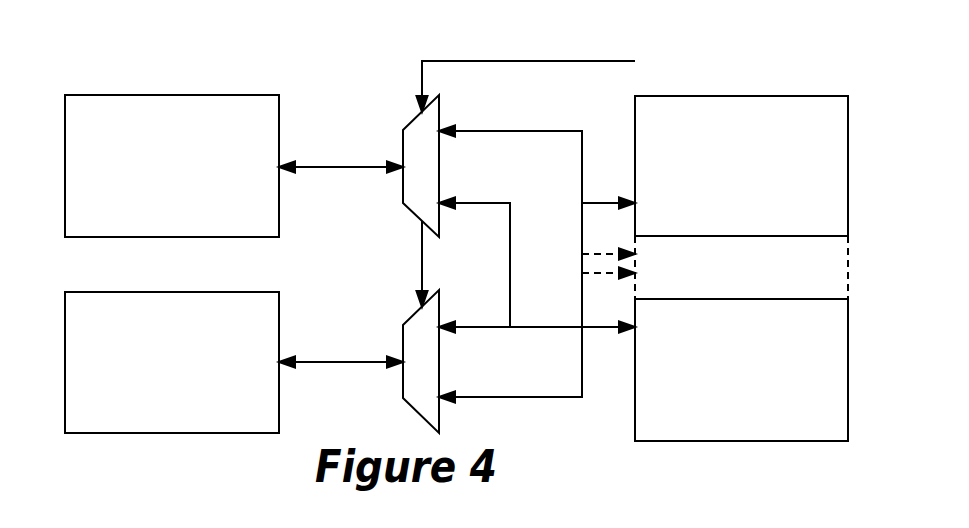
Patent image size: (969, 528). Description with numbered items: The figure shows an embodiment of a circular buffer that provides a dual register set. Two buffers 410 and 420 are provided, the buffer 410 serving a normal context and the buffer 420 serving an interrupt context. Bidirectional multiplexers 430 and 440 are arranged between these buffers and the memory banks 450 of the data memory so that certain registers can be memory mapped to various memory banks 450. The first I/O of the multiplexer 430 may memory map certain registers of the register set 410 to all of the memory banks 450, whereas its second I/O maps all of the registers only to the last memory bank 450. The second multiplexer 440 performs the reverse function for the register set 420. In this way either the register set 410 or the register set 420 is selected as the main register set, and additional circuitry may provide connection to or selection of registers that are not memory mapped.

The buffer 410 is at (172, 166).
The buffer 420 is at (172, 362).
The bidirectional multiplexer 430 is at (420, 114).
The bidirectional multiplexer 440 is at (430, 380).
The memory banks 450 is at (815, 66).